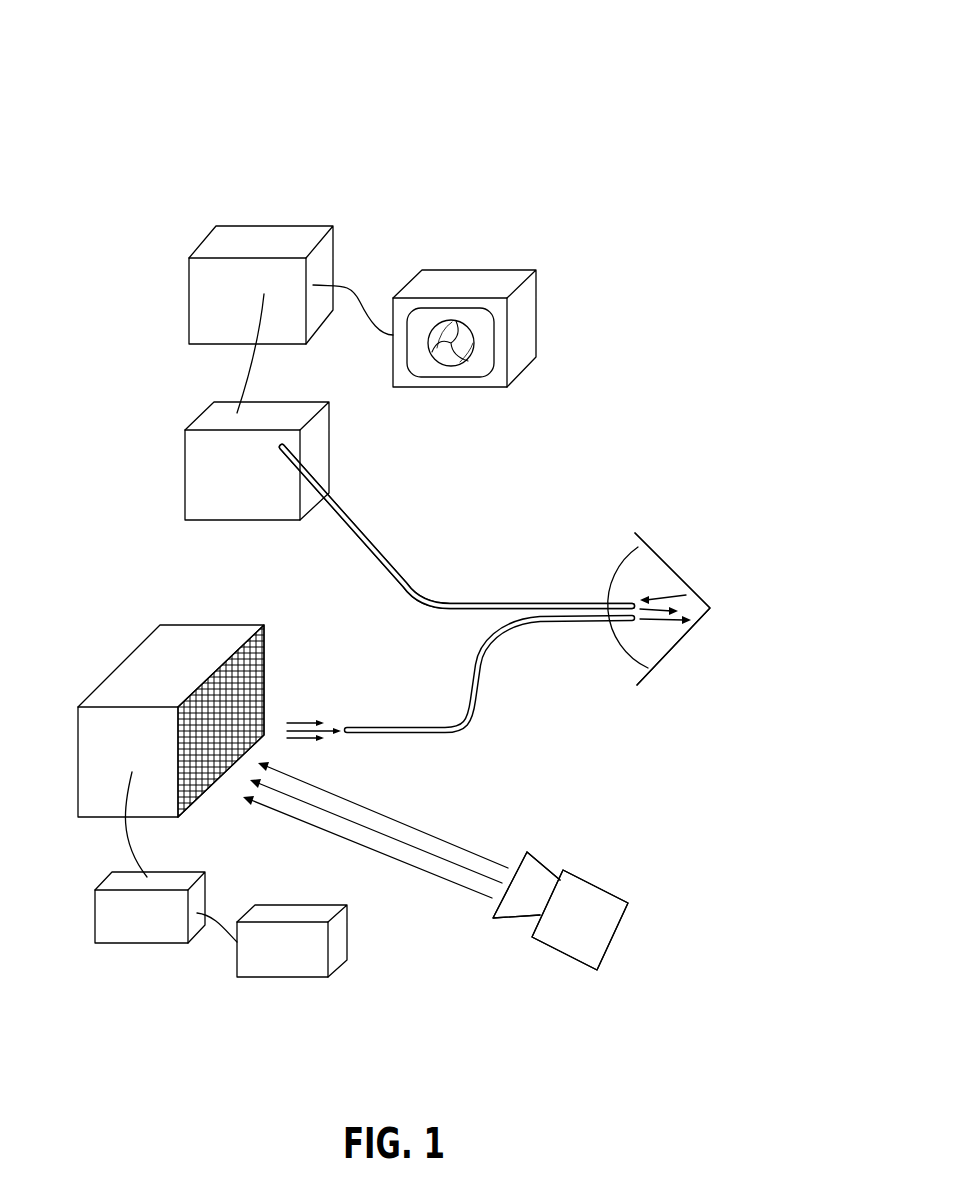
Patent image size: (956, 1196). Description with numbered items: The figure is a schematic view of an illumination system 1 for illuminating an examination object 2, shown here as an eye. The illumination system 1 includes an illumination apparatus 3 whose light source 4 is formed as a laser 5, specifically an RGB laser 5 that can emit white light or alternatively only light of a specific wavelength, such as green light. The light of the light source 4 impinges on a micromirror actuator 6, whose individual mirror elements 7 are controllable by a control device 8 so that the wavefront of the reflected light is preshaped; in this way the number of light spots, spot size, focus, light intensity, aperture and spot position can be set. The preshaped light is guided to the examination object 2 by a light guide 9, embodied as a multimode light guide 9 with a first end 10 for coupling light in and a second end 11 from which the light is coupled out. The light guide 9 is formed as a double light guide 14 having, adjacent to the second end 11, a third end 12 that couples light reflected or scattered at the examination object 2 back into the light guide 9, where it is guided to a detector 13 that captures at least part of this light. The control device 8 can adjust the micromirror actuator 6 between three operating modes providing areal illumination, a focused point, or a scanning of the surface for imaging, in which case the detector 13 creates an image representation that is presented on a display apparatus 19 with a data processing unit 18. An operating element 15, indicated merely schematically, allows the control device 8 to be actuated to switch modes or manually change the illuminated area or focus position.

The illumination system 1 is at (398, 188).
The examination object 2 is at (684, 542).
The illumination apparatus 3 is at (433, 938).
The light source 4 is at (583, 913).
The laser 5 is at (583, 913).
The micromirror actuator 6 is at (177, 667).
The mirror elements 7 is at (200, 733).
The control device 8 is at (133, 923).
The light guide 9 is at (480, 653).
The first end 10 is at (347, 727).
The second end 11 is at (662, 668).
The third end 12 is at (662, 668).
The detector 13 is at (217, 447).
The double light guide 14 is at (480, 653).
The operating element 15 is at (278, 943).
The data processing unit 18 is at (232, 312).
The display apparatus 19 is at (523, 340).